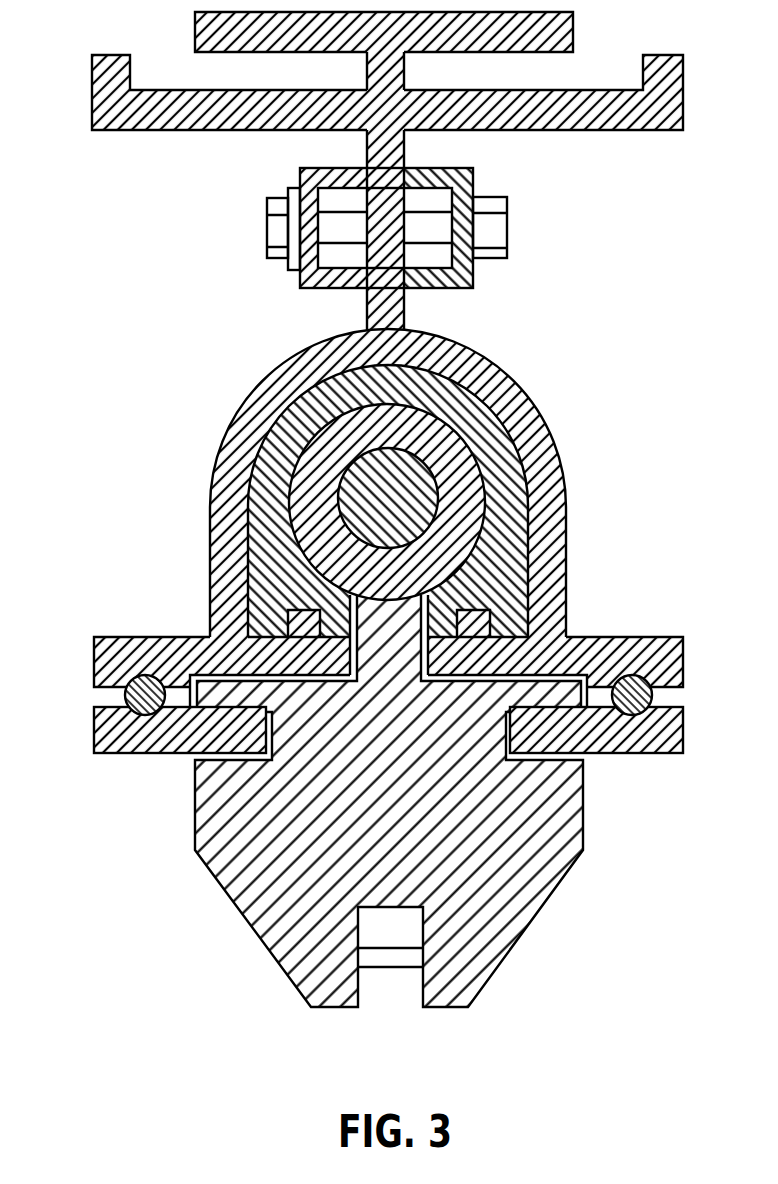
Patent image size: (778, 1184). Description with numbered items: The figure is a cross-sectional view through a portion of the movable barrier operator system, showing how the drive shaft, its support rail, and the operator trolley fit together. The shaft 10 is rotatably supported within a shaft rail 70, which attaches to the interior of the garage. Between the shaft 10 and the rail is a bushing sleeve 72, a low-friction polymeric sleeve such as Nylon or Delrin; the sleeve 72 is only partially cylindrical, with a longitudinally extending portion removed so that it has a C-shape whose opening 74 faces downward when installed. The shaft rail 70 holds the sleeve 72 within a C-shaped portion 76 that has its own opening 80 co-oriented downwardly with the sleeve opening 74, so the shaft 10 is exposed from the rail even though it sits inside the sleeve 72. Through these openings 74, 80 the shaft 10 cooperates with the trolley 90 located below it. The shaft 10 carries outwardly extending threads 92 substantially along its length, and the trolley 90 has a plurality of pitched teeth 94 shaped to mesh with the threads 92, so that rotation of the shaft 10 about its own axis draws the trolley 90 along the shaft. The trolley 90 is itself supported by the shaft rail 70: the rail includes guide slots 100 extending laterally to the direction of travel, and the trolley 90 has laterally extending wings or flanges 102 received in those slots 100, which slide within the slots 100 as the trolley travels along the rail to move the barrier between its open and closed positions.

The shaft rail 70 is at (590, 285).
The shaft 10 is at (317, 490).
The bushing sleeve 72 is at (505, 528).
The opening 74 is at (525, 555).
The C-shaped portion 76 is at (543, 597).
The opening 80 is at (510, 635).
The trolley 90 is at (525, 903).
The threads 92 is at (453, 453).
The pitched teeth 94 is at (260, 565).
The guide slots 100 is at (190, 703).
The flanges 102 is at (212, 692).